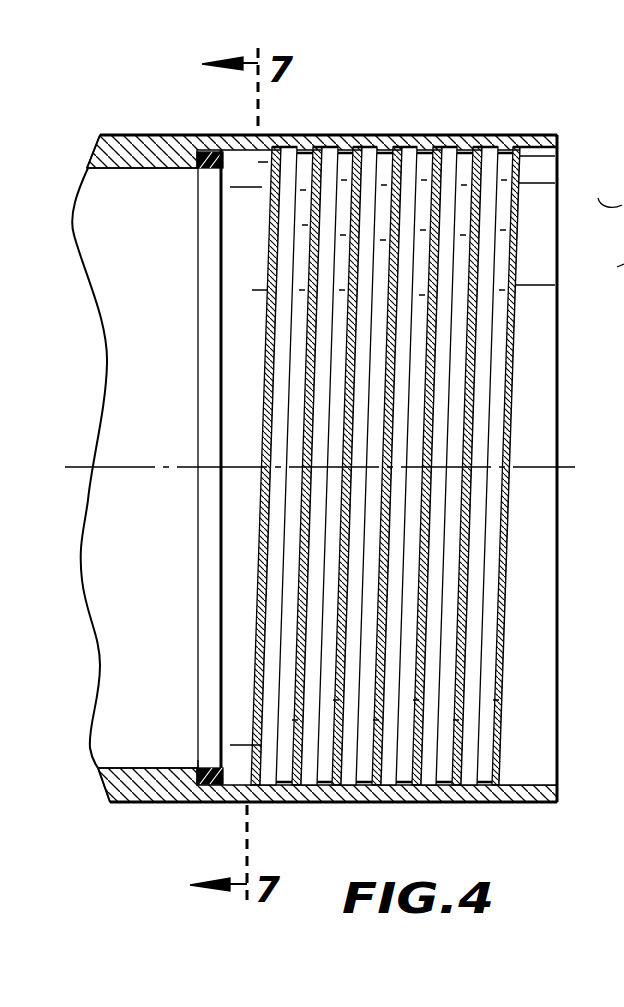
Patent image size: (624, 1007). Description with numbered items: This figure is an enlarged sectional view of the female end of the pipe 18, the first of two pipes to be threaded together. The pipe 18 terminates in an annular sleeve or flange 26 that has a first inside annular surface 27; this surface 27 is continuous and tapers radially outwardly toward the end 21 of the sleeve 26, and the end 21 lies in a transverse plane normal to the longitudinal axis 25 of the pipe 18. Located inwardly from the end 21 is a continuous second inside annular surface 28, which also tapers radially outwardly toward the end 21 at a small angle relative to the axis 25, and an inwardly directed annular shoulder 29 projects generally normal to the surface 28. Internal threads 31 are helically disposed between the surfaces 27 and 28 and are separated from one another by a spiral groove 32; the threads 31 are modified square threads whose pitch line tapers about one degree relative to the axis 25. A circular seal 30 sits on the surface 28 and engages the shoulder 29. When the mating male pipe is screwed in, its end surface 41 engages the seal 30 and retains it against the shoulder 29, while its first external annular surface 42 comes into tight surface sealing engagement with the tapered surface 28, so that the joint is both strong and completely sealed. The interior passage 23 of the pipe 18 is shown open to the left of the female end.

The pipe 18 is at (122, 148).
The end 21 is at (562, 138).
The interior passage 23 is at (168, 408).
The longitudinal axis 25 is at (73, 470).
The annular sleeve or flange 26 is at (538, 150).
The first inside annular surface 27 is at (531, 785).
The second inside annular surface 28 is at (249, 150).
The annular shoulder 29 is at (203, 779).
The circular seal 30 is at (204, 770).
The internal threads 31 is at (426, 140).
The spiral groove 32 is at (328, 158).
The end surface 41 is at (606, 190).
The first external annular surface 42 is at (606, 270).